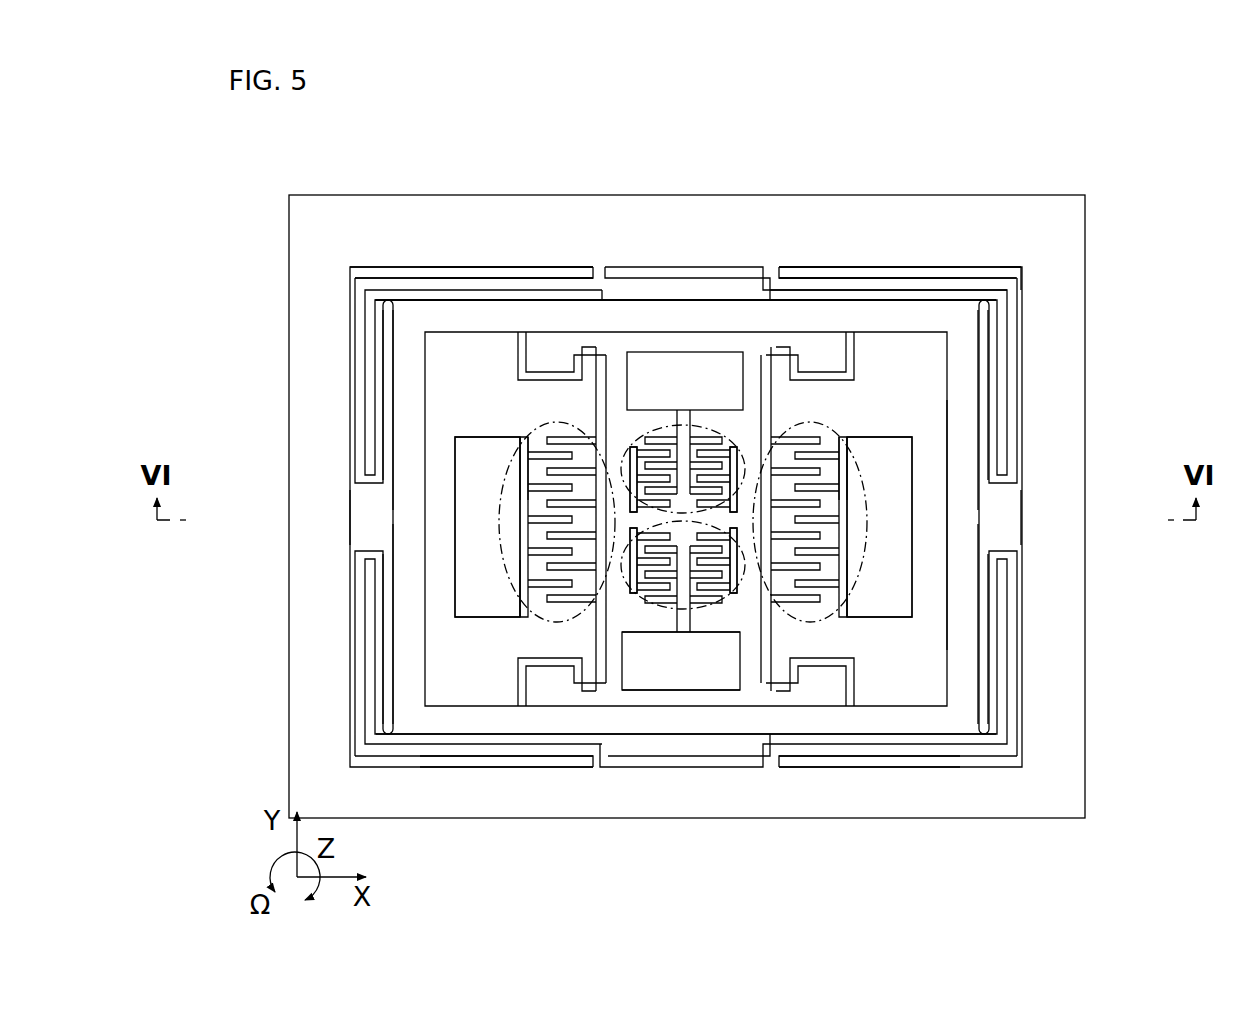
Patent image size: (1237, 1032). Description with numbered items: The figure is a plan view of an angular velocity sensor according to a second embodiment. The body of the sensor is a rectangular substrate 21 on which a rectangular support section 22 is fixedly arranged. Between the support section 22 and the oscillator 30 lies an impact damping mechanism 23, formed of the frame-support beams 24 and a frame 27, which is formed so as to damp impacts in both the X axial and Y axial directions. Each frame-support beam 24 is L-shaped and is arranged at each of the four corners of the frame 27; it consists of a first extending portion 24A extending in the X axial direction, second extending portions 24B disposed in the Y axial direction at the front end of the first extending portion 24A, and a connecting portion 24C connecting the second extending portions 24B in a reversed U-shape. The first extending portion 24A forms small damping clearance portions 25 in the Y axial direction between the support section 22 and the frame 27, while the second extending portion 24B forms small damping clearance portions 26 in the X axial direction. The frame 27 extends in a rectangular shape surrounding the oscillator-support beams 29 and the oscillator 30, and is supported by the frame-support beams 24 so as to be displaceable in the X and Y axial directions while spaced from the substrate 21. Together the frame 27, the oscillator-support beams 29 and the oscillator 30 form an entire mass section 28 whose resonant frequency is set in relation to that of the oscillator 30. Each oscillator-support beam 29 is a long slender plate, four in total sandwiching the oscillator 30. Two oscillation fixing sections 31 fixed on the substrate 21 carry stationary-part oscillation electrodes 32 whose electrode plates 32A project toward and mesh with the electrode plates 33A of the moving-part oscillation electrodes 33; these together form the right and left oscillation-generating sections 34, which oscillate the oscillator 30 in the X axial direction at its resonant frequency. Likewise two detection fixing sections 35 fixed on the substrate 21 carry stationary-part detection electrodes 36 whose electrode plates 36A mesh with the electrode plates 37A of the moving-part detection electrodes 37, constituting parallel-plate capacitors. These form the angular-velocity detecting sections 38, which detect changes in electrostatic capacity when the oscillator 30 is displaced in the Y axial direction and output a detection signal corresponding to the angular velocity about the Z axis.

The substrate 21 is at (935, 580).
The support section 22 is at (1068, 248).
The impact damping mechanism 23 is at (1016, 268).
The frame-support beam 24 is at (352, 280).
The first extending portion 24A is at (398, 282).
The second extending portion 24B is at (360, 371).
The connecting portion 24C is at (356, 553).
The small damping clearance portion 25 is at (434, 272).
The small damping clearance portion 26 is at (356, 330).
The frame 27 is at (950, 630).
The entire mass section 28 is at (907, 290).
The oscillator-support beam 29 is at (560, 372).
The oscillator 30 is at (640, 642).
The oscillation fixing section 31 is at (465, 600).
The stationary-part oscillation electrode 32 is at (518, 582).
The electrode plate 32A is at (840, 455).
The moving-part oscillation electrode 33 is at (775, 437).
The electrode plate 33A is at (548, 520).
The oscillation-generating section 34 is at (878, 530).
The detection fixing section 35 is at (668, 372).
The stationary-part detection electrode 36 is at (635, 440).
The electrode plate 36A is at (720, 604).
The moving-part detection electrode 37 is at (705, 455).
The electrode plate 37A is at (724, 455).
The angular-velocity detecting section 38 is at (650, 428).